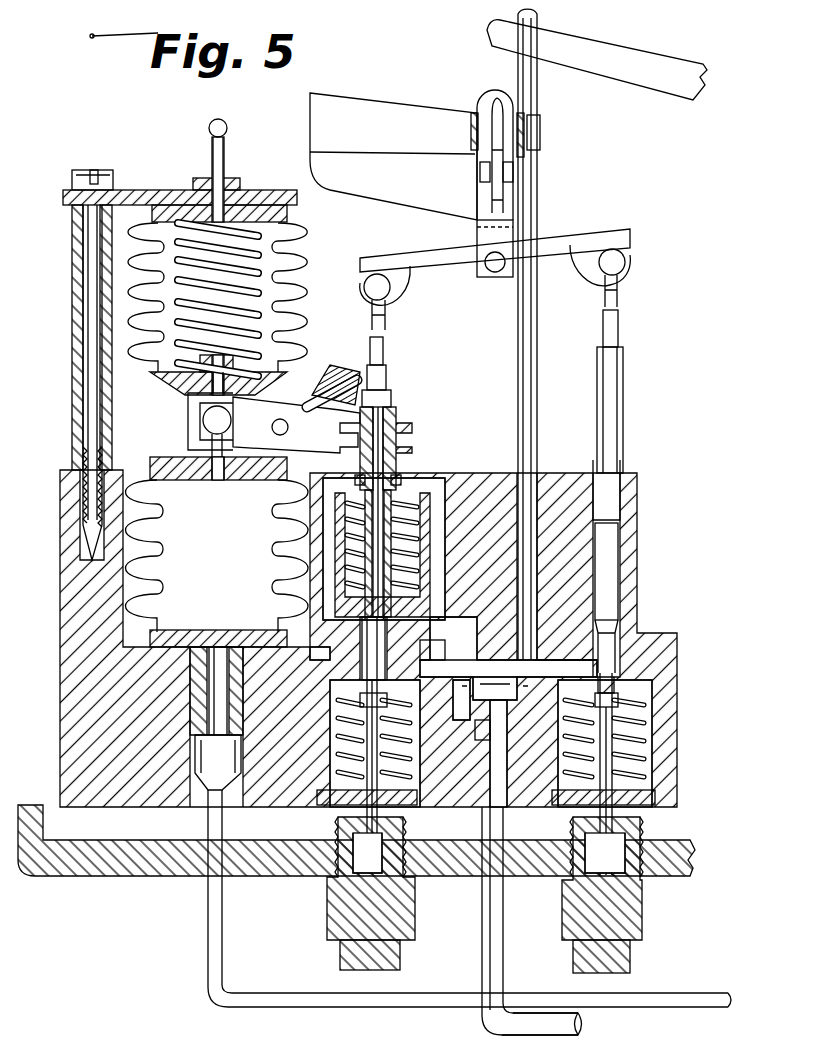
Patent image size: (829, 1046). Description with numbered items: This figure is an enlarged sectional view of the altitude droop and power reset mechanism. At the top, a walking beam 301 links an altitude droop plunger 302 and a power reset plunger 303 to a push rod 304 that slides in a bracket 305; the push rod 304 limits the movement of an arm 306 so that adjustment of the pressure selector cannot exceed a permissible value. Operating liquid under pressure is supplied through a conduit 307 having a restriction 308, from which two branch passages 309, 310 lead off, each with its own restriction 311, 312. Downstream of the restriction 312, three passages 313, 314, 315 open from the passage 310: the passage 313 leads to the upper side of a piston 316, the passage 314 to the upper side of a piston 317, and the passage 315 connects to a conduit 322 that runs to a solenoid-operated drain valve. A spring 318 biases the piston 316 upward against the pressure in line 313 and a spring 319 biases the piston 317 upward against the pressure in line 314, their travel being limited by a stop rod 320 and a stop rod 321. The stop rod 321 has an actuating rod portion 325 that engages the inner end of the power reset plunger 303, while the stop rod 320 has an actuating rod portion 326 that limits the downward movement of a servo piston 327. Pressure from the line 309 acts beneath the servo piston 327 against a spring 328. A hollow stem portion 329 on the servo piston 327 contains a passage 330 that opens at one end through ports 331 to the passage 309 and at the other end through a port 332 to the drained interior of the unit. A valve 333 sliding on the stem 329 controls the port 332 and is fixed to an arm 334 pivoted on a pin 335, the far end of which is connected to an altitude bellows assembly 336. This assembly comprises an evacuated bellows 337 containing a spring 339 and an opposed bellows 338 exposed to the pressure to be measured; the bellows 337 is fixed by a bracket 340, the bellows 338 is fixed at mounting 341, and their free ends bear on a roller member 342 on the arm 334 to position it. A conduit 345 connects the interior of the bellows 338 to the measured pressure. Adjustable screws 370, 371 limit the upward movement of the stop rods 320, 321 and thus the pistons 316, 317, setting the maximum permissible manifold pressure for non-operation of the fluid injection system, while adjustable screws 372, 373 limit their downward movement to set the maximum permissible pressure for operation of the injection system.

The walking beam 301 is at (550, 243).
The altitude droop plunger 302 is at (385, 352).
The power reset plunger 303 is at (622, 326).
The push rod 304 is at (487, 110).
The bracket 305 is at (545, 138).
The arm 306 is at (637, 53).
The conduit 307 is at (563, 1030).
The restriction 308 is at (430, 802).
The branch passage 309 is at (453, 627).
The branch passage 310 is at (518, 713).
The restriction 311 is at (453, 688).
The restriction 312 is at (495, 689).
The passage 313 is at (492, 670).
The passage 314 is at (560, 673).
The passage 315 is at (527, 570).
The piston 316 is at (320, 697).
The piston 317 is at (650, 705).
The spring 318 is at (323, 738).
The spring 319 is at (633, 747).
The stop rod 320 is at (347, 812).
The stop rod 321 is at (612, 813).
The conduit 322 is at (540, 360).
The actuating rod portion 325 is at (612, 642).
The actuating rod portion 326 is at (330, 653).
The servo piston 327 is at (410, 560).
The spring 328 is at (397, 523).
The hollow stem portion 329 is at (382, 460).
The passage 330 is at (373, 490).
The ports 331 is at (388, 607).
The port 332 is at (388, 420).
The valve 333 is at (407, 430).
The arm 334 is at (333, 440).
The pin 335 is at (322, 385).
The altitude bellows assembly 336 is at (186, 401).
The bellows 337 is at (303, 262).
The bellows 338 is at (278, 577).
The spring 339 is at (258, 293).
The bracket 340 is at (137, 193).
The mounting 341 is at (178, 633).
The roller member 342 is at (213, 423).
The conduit 345 is at (268, 1008).
The adjustable screw 370 is at (345, 905).
The adjustable screw 371 is at (628, 903).
The adjustable screw 372 is at (360, 957).
The adjustable screw 373 is at (607, 967).